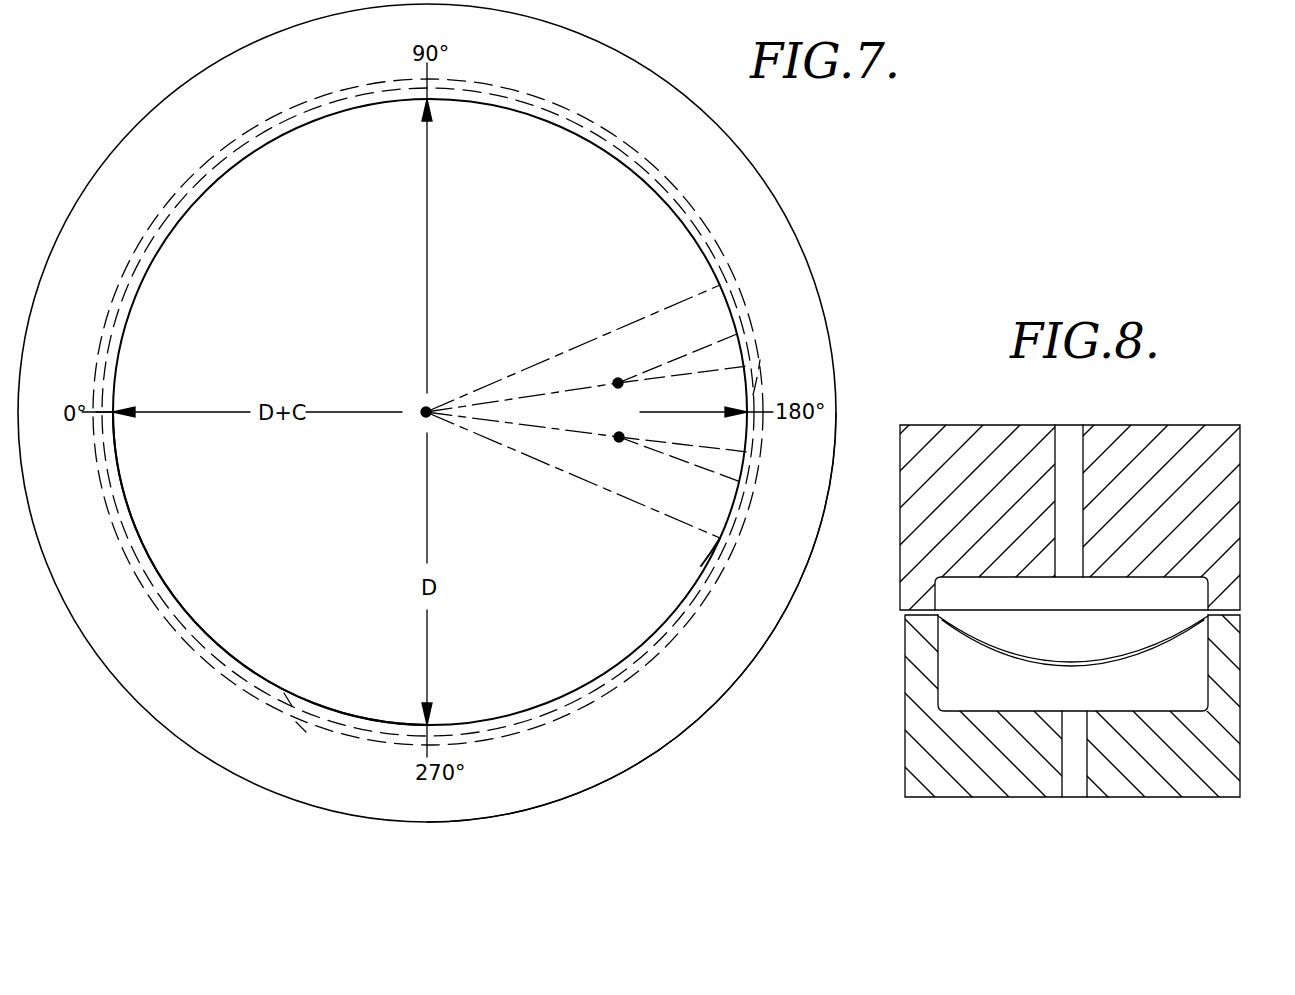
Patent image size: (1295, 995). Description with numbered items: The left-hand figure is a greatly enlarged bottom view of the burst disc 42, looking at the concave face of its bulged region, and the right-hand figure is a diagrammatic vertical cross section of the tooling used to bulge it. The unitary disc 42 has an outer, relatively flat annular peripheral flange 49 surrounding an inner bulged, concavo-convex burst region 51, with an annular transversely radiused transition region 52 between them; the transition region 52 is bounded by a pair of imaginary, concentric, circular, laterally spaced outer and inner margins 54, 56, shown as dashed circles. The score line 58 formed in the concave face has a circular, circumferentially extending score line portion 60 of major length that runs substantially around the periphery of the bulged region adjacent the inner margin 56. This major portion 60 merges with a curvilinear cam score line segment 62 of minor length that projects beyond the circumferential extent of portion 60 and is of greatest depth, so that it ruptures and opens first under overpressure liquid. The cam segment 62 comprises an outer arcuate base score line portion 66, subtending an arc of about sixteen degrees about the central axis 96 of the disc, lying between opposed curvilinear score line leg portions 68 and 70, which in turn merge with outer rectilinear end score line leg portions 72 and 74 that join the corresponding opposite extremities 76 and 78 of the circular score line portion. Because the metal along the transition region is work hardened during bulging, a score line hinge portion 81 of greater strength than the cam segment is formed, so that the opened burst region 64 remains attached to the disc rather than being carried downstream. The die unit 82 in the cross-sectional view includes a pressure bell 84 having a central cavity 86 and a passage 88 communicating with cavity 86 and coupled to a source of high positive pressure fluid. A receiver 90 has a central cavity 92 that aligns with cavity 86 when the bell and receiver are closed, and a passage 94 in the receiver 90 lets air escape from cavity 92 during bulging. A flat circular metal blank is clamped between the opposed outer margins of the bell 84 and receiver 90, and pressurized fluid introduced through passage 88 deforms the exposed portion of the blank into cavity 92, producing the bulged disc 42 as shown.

In FIG. 7, the burst disc 42 is at (764, 164).
In FIG. 8, the burst disc 42 is at (1040, 663).
In FIG. 7, the annular peripheral flange 49 is at (692, 682).
In FIG. 7, the concavo-convex burst region 51 is at (258, 208).
In FIG. 7, the transition region 52 is at (232, 673).
In FIG. 7, the outer imaginary margin 54 is at (302, 733).
In FIG. 7, the inner imaginary margin 56 is at (292, 692).
In FIG. 7, the score line 58 is at (516, 113).
In FIG. 7, the circular score line portion 60 is at (166, 583).
In FIG. 7, the cam score line segment 62 is at (753, 378).
In FIG. 7, the burst region 64 is at (339, 471).
In FIG. 7, the arcuate base score line portion 66 is at (748, 426).
In FIG. 7, the curvilinear score line leg portion 68 is at (746, 468).
In FIG. 7, the curvilinear score line leg portion 70 is at (742, 350).
In FIG. 7, the rectilinear end score line leg portion 72 is at (736, 305).
In FIG. 7, the rectilinear end score line leg portion 74 is at (734, 512).
In FIG. 7, the extremity of score line segment 76 is at (722, 535).
In FIG. 7, the extremity of score line segment 78 is at (718, 285).
In FIG. 7, the score line hinge portion 81 is at (118, 408).
In FIG. 7, the central axis 96 is at (426, 411).
In FIG. 8, the die unit 82 is at (1067, 572).
In FIG. 8, the pressure bell 84 is at (950, 452).
In FIG. 8, the central cavity 86 is at (1196, 589).
In FIG. 8, the passage 88 is at (1069, 432).
In FIG. 8, the receiver 90 is at (928, 759).
In FIG. 8, the central cavity 92 is at (947, 666).
In FIG. 8, the passage 94 is at (1071, 717).